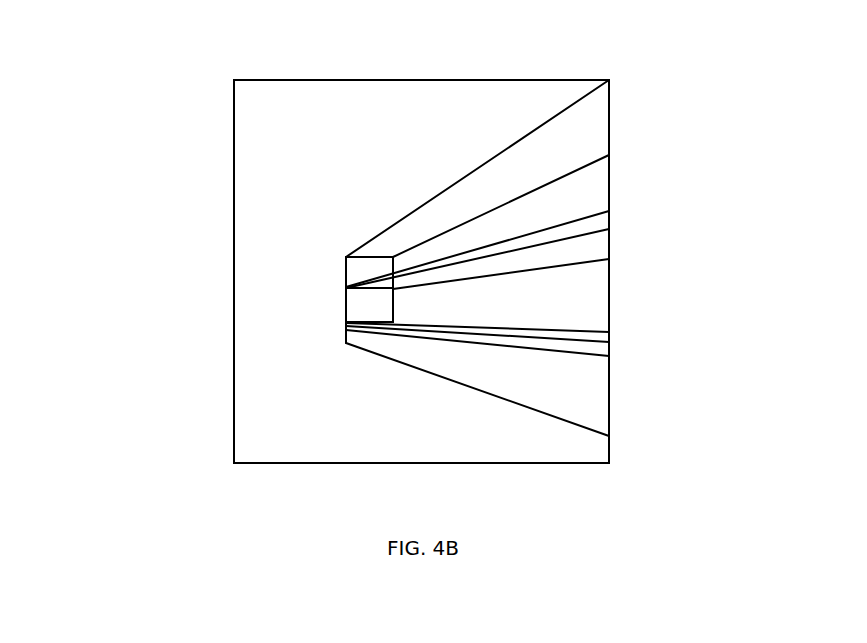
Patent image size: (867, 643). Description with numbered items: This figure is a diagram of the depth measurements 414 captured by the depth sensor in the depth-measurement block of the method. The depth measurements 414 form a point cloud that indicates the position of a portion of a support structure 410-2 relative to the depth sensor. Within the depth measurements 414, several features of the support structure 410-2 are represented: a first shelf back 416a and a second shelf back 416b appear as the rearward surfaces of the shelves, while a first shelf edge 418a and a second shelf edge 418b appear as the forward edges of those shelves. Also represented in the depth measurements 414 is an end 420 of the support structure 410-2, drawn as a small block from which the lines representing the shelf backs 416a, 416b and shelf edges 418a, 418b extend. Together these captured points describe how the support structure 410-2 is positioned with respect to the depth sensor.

The depth measurements 414 is at (233, 155).
The end of the support structure 420 is at (345, 275).
The support structure 410-2 is at (595, 138).
The shelf back 416a is at (594, 183).
The shelf edge 418a is at (598, 223).
The shelf back 416b is at (588, 315).
The shelf edge 418b is at (597, 354).